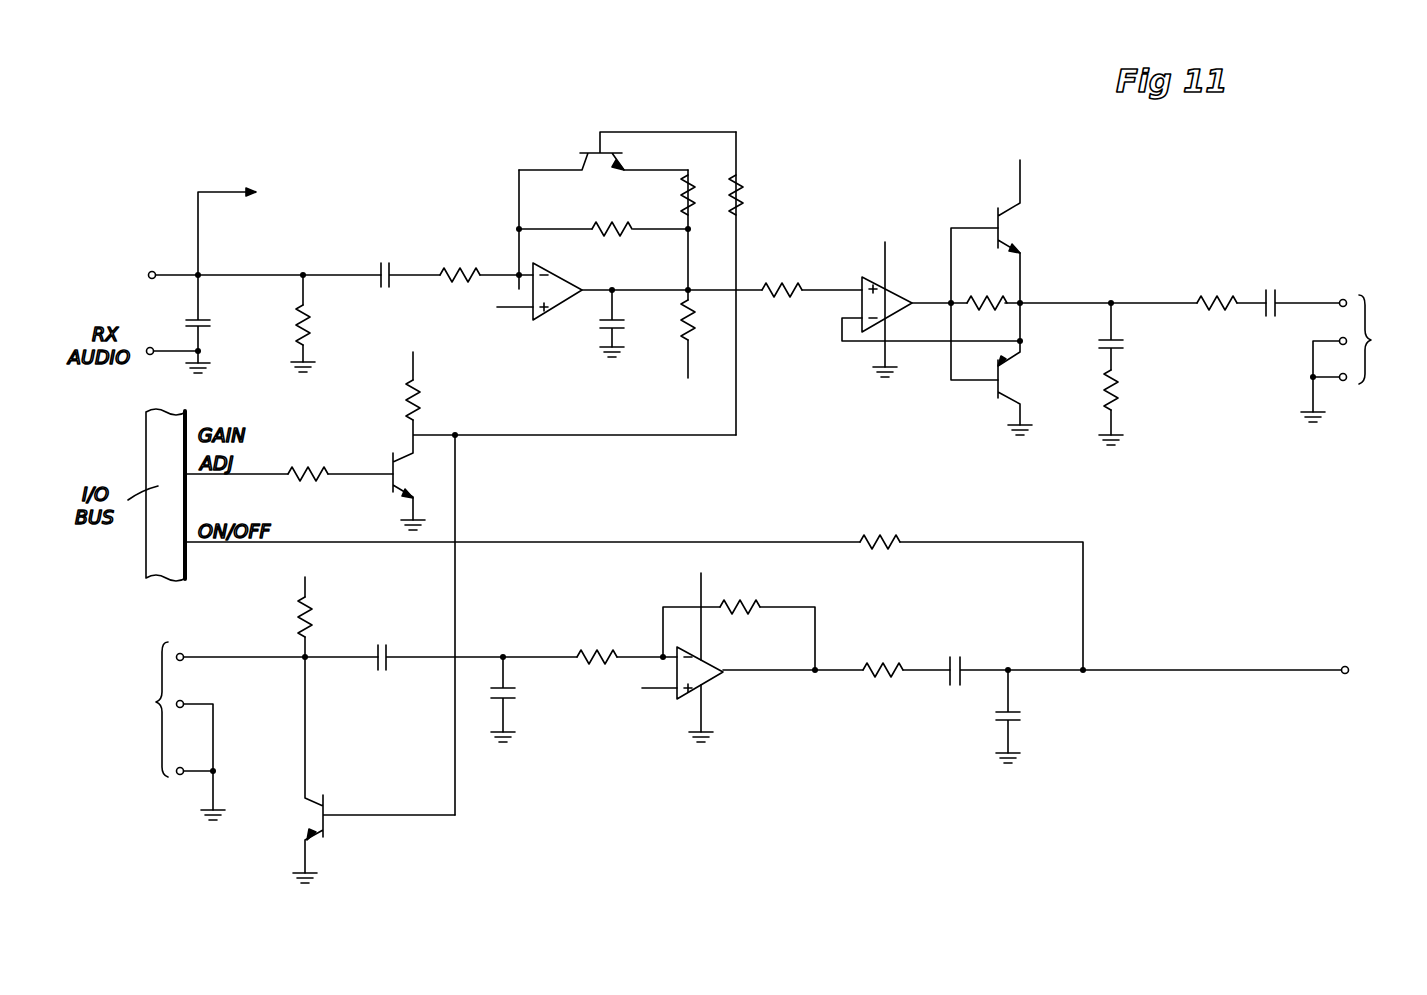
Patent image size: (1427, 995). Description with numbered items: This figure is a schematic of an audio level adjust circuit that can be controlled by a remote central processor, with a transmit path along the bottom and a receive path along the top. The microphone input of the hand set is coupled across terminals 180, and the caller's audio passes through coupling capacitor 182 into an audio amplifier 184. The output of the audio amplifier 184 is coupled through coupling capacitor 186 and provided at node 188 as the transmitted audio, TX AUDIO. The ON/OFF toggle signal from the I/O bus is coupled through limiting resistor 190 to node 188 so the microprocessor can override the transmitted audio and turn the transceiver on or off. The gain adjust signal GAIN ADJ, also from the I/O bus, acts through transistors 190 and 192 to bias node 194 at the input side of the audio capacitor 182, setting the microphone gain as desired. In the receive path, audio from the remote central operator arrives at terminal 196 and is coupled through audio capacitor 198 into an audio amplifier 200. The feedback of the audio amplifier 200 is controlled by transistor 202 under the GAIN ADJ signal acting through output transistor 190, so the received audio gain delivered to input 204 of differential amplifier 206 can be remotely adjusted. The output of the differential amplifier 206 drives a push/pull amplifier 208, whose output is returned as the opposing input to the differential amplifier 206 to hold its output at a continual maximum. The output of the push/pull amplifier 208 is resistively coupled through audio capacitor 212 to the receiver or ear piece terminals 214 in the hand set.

The terminals 180 is at (168, 731).
The coupling capacitor 182 is at (385, 645).
The audio amplifier 184 is at (655, 638).
The coupling capacitor 186 is at (955, 656).
The node 188 is at (1384, 637).
The limiting resistor 190 is at (376, 466).
The transistor 192 is at (328, 805).
The node 194 is at (308, 662).
The terminal 196 is at (173, 246).
The audio capacitor 198 is at (379, 265).
The audio amplifier 200 is at (494, 210).
The transistor 202 is at (620, 130).
The input 204 is at (830, 288).
The differential amplifier 206 is at (938, 270).
The push/pull amplifier 208 is at (1030, 296).
The audio capacitor 212 is at (1270, 286).
The receiver or ear piece terminals 214 is at (1355, 358).